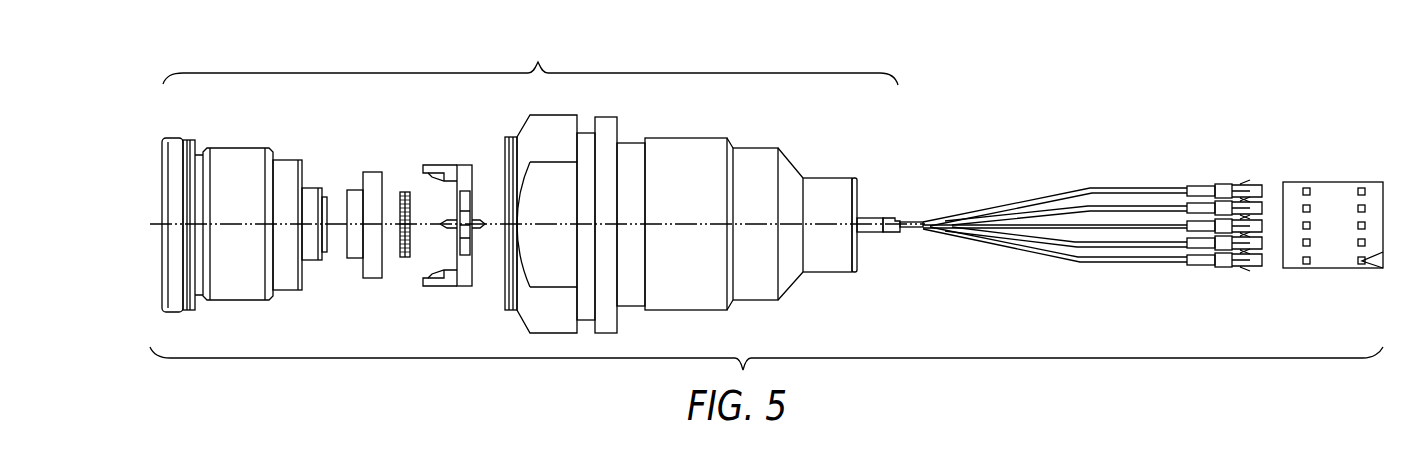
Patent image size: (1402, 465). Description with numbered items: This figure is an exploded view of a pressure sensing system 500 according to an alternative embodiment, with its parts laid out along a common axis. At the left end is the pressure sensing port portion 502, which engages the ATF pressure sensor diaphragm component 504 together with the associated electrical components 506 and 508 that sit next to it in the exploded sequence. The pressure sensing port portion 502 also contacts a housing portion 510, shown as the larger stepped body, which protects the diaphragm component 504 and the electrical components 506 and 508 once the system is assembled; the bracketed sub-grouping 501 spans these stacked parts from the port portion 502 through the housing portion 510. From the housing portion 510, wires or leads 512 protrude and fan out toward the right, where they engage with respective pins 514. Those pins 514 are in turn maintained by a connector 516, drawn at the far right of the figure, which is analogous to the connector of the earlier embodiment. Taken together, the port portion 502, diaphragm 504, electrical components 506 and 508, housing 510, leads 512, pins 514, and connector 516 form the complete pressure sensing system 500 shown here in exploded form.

The pressure sensing system 500 is at (1045, 84).
The sensor head subassembly 501 is at (530, 59).
The pressure sensing port portion 502 is at (238, 140).
The ATF pressure sensor diaphragm component 504 is at (368, 156).
The electrical component 506 is at (405, 178).
The electrical component 508 is at (466, 153).
The housing portion 510 is at (676, 130).
The wires or leads 512 is at (1121, 170).
The pins 514 is at (1214, 168).
The connector 516 is at (1334, 169).